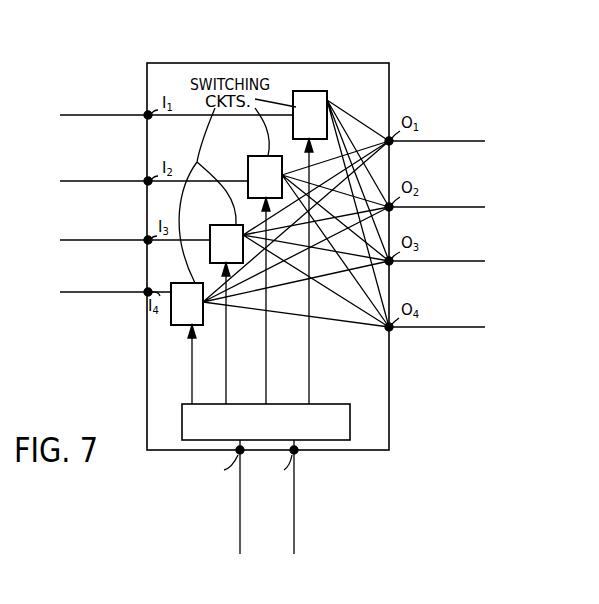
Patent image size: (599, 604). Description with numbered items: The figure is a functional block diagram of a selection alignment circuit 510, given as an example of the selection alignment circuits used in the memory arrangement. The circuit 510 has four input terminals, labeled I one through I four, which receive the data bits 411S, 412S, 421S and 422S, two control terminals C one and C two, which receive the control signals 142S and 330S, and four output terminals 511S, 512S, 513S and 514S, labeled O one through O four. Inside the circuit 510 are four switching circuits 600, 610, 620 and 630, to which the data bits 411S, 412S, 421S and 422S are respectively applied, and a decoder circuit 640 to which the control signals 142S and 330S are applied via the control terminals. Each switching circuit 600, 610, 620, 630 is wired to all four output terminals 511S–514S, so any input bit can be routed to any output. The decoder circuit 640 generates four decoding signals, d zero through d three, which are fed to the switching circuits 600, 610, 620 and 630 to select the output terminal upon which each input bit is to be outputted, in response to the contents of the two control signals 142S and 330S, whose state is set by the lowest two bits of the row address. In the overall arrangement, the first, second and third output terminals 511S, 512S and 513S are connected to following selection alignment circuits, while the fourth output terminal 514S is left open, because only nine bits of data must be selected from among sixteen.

The selection alignment circuit 510 is at (352, 42).
The switching circuit 600 is at (326, 92).
The switching circuit 610 is at (260, 156).
The switching circuit 620 is at (225, 224).
The switching circuit 630 is at (196, 283).
The decoder circuit 640 is at (338, 404).
The data bit 411S is at (176, 105).
The data bit 412S is at (154, 173).
The data bit 421S is at (135, 229).
The data bit 422S is at (115, 283).
The output terminal 511S is at (452, 146).
The output terminal 512S is at (452, 210).
The output terminal 513S is at (452, 264).
The output terminal 514S is at (452, 330).
The control signal 330S is at (234, 510).
The control signal 142S is at (289, 510).